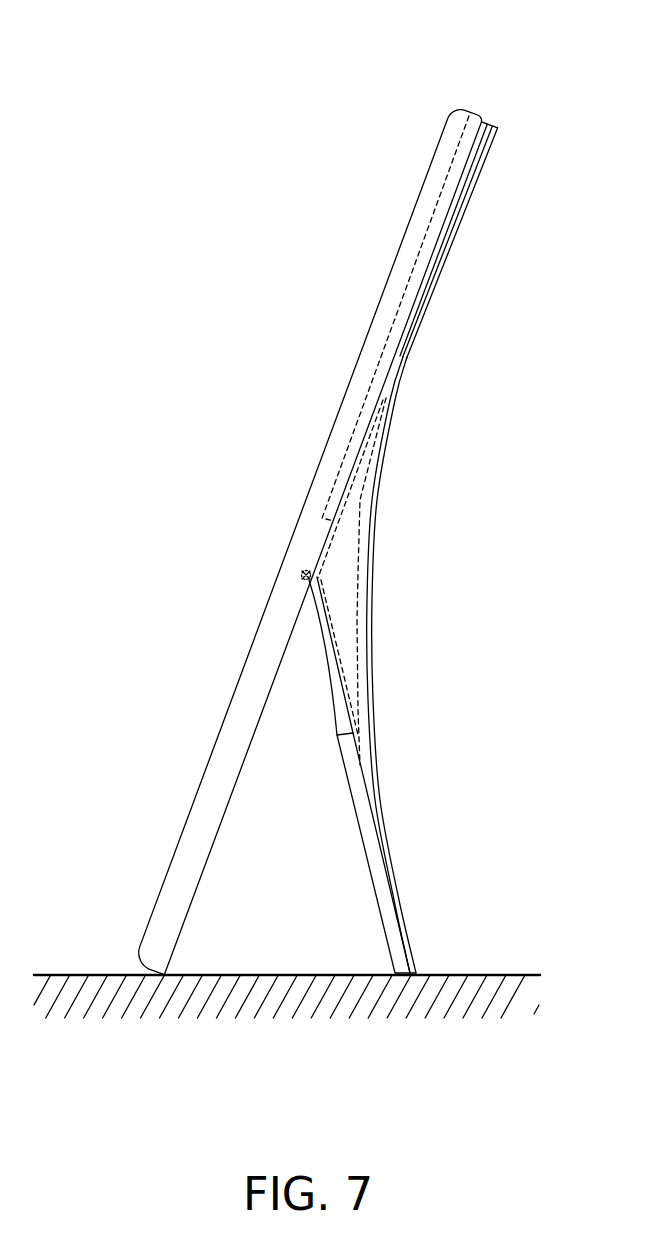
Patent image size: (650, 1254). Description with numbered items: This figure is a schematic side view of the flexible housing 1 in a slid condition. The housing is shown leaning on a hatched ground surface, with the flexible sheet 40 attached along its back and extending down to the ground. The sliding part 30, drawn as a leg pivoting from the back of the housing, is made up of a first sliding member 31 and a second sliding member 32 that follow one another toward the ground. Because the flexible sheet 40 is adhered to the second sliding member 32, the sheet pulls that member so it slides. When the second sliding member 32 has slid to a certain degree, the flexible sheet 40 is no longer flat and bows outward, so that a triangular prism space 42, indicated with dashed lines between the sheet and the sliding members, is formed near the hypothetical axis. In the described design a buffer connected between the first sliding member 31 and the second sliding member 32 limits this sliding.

The flexible housing 1 is at (325, 101).
The sliding part 30 is at (470, 683).
The first sliding member 31 is at (342, 715).
The second sliding member 32 is at (368, 837).
The flexible sheet 40 is at (406, 357).
The triangular prism space 42 is at (342, 579).